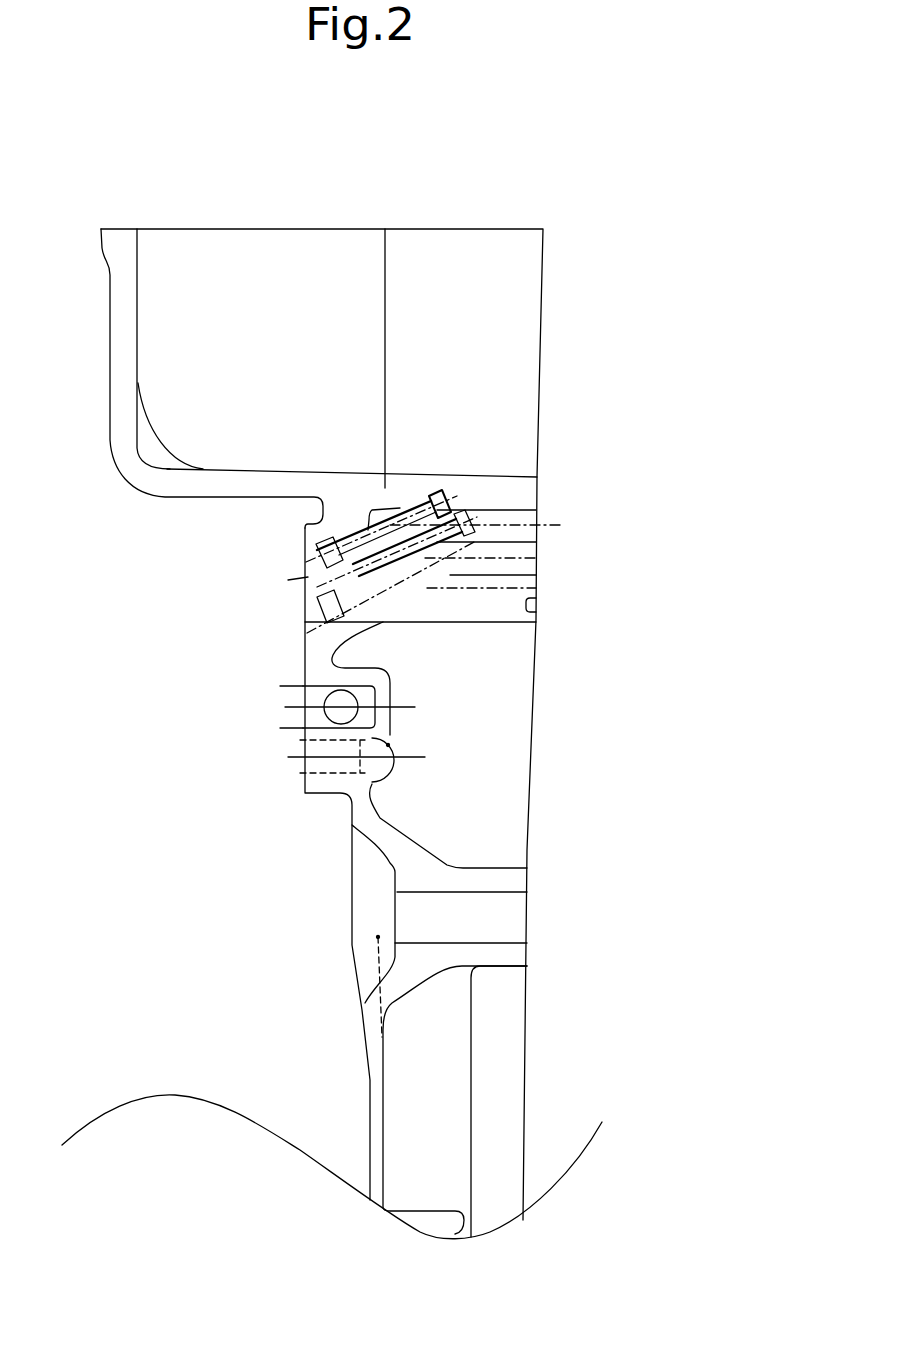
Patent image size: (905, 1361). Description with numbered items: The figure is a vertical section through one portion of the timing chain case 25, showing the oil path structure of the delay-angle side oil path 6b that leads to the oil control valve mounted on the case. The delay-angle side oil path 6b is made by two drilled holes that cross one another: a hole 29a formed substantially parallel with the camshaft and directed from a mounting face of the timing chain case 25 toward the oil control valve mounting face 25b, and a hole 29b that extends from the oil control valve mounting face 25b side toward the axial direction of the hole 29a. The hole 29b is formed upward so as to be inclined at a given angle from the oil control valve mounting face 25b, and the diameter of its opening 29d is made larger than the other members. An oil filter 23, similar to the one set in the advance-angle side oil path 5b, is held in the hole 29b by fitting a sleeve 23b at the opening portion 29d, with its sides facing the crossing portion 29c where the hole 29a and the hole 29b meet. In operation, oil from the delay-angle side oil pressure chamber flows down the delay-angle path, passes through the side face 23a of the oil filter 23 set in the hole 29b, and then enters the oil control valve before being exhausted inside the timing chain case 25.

The advance-angle side oil path 5b is at (546, 590).
The delay-angle side oil path 6b is at (548, 513).
The oil filter 23 is at (307, 565).
The side face of oil filter 23a is at (455, 545).
The sleeve 23b is at (307, 537).
The timing chain case 25 is at (160, 497).
The oil control valve mounting face 25b is at (305, 650).
The hole 29a is at (538, 532).
The hole 29b is at (350, 532).
The crossing portion 29c is at (408, 495).
The opening 29d is at (307, 585).